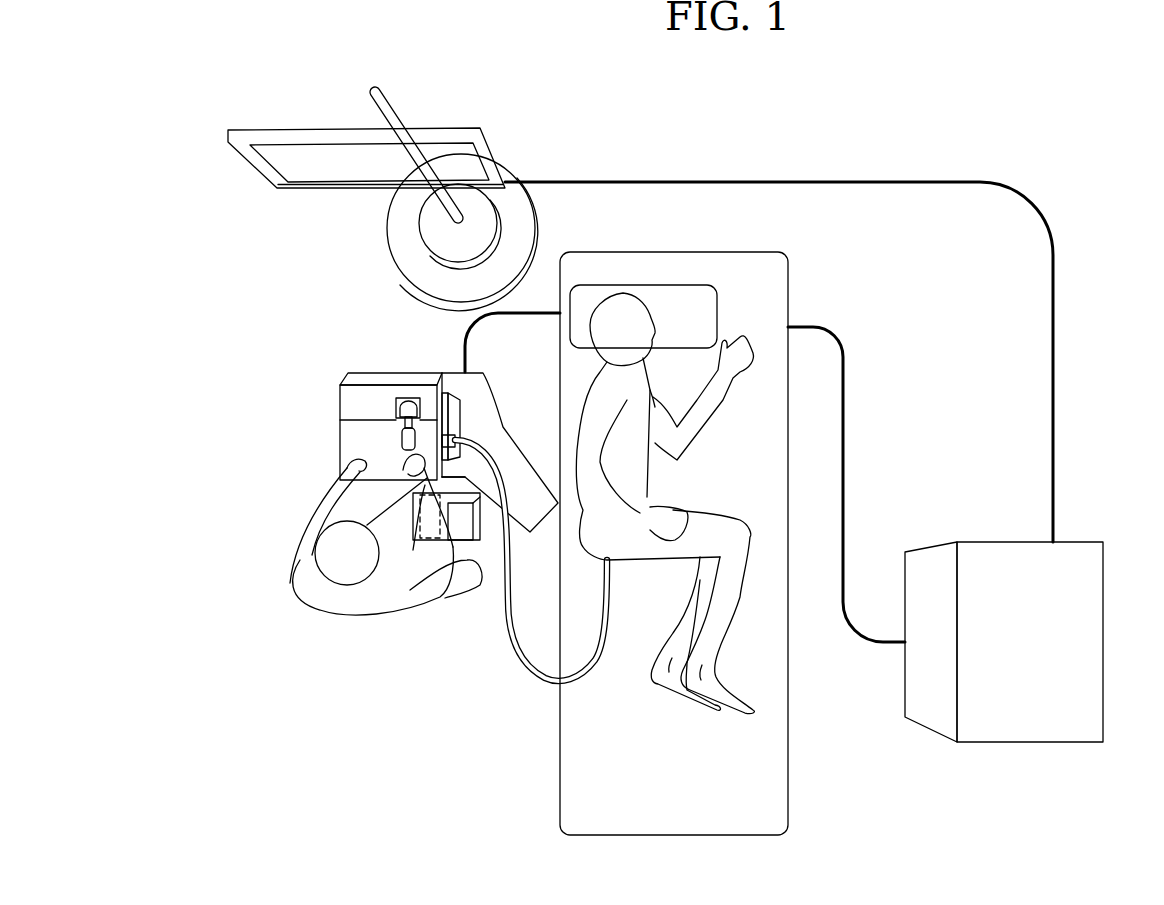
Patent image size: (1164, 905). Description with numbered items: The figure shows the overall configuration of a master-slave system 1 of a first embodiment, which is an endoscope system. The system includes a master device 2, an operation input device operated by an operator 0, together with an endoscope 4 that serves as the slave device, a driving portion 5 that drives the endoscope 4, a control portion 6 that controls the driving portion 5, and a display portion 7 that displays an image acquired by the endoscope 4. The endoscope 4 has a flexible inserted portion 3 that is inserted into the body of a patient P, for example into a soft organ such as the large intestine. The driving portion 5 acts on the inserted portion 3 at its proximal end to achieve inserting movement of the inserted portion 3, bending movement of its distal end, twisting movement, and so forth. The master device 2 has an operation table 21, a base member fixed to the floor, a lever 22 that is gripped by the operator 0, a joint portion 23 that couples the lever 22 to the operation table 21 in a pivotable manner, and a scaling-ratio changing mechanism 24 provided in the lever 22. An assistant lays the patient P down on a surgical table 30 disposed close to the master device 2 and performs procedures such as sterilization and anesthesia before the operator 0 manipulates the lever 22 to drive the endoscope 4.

The master-slave system 1 is at (990, 138).
The master device 2 is at (335, 355).
The inserted portion 3 is at (537, 680).
The endoscope 4 is at (523, 591).
The driving portion 5 is at (460, 410).
The control portion 6 is at (1087, 638).
The display portion 7 is at (273, 185).
The operator 0 is at (352, 610).
The operation table 21 is at (340, 398).
The lever 22 is at (402, 442).
The joint portion 23 is at (410, 402).
The scaling-ratio changing mechanism 24 is at (383, 386).
The surgical table 30 is at (778, 778).
The patient P is at (622, 307).